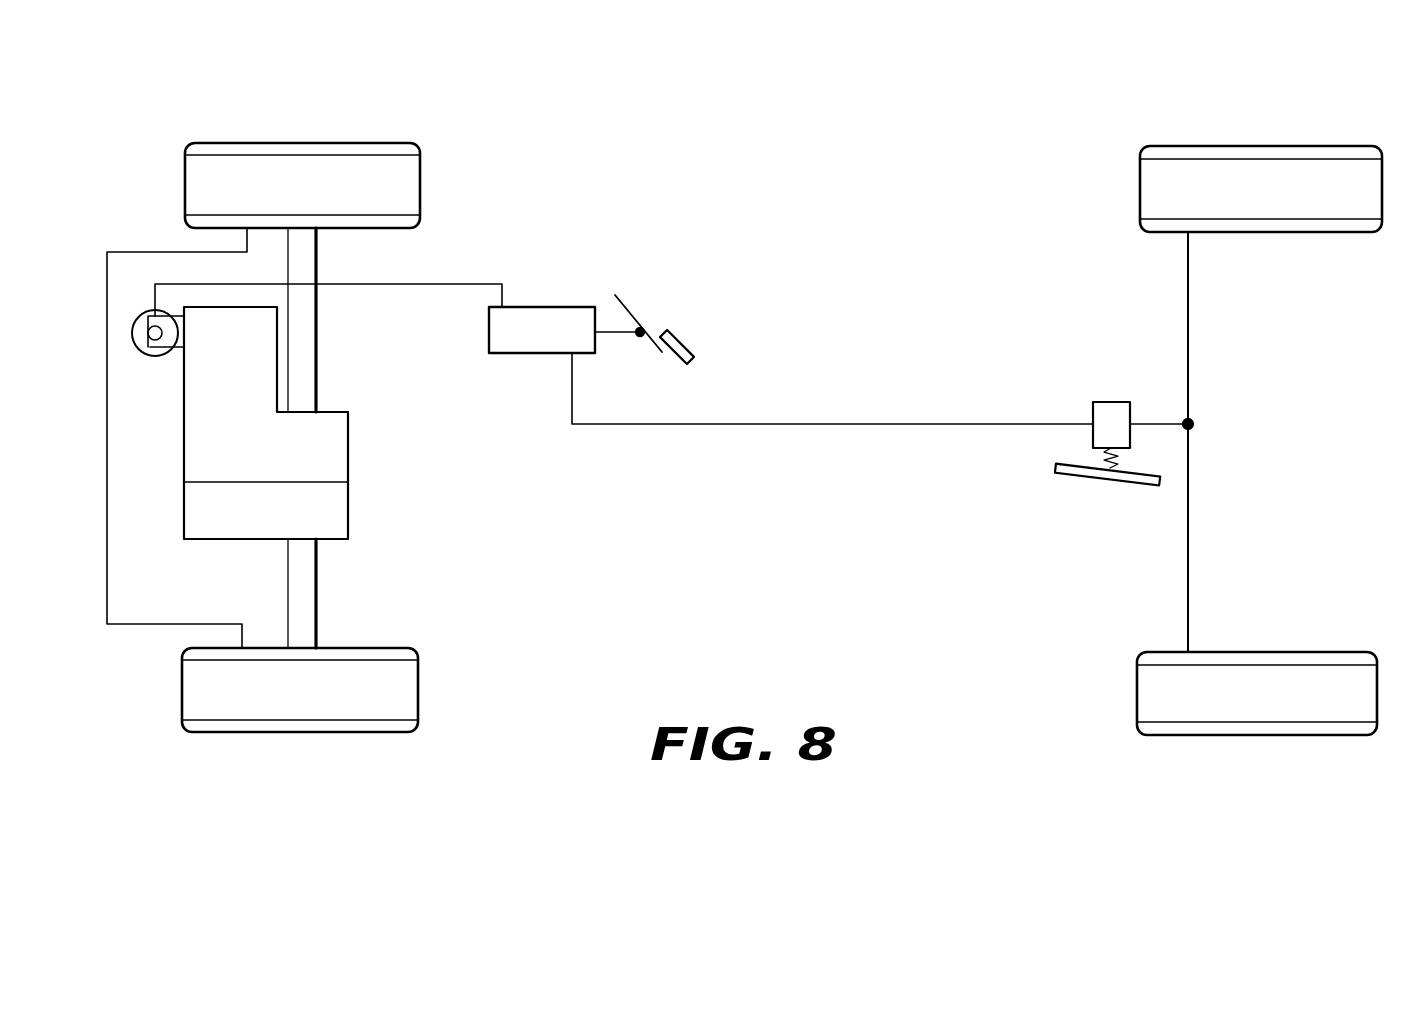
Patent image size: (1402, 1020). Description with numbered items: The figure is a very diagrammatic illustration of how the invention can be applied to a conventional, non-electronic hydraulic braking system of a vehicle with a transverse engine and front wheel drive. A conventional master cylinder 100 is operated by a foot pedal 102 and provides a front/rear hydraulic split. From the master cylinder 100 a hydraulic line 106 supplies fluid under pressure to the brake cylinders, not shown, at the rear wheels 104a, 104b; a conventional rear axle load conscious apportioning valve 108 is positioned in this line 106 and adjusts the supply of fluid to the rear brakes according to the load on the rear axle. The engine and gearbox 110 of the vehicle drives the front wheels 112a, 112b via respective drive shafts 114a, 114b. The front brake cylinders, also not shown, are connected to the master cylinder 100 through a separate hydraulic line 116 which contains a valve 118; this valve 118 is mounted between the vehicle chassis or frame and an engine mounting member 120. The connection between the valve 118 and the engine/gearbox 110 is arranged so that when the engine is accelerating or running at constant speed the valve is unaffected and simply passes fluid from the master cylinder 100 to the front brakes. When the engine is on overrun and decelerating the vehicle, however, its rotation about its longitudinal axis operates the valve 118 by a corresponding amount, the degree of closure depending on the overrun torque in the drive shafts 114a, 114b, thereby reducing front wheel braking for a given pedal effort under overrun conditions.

The master cylinder 100 is at (510, 349).
The foot pedal 102 is at (634, 312).
The rear wheel 104a is at (1288, 213).
The rear wheel 104b is at (1342, 660).
The hydraulic line 106 is at (932, 425).
The accelerator pedal sensor 108 is at (1111, 408).
The engine and gearbox 110 is at (344, 509).
The front wheel 112a is at (304, 164).
The front wheel 112b is at (295, 714).
The drive shaft 114a is at (312, 325).
The drive shaft 114b is at (312, 593).
The hydraulic line 116 is at (468, 283).
The valve 118 is at (133, 328).
The engine mounting member 120 is at (172, 352).